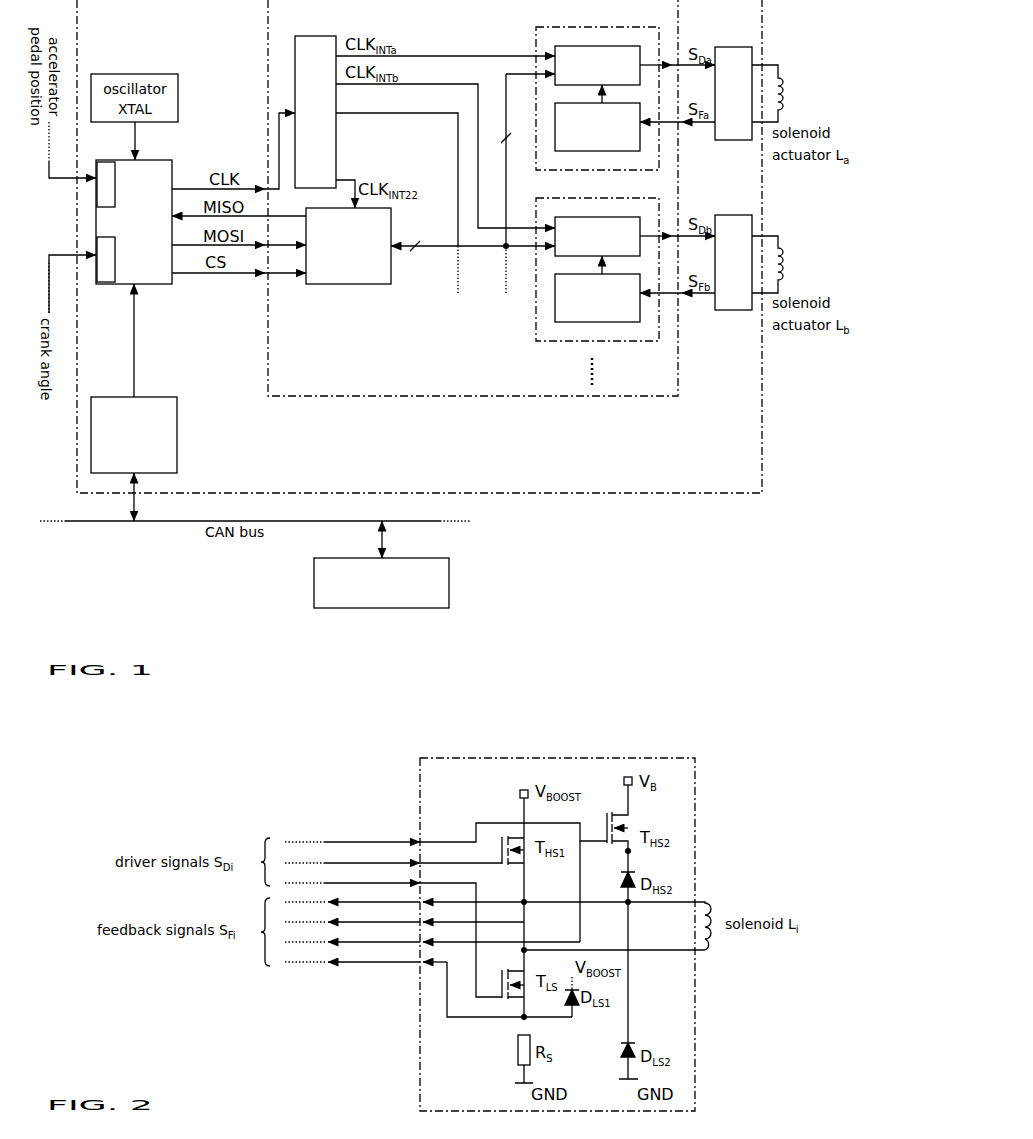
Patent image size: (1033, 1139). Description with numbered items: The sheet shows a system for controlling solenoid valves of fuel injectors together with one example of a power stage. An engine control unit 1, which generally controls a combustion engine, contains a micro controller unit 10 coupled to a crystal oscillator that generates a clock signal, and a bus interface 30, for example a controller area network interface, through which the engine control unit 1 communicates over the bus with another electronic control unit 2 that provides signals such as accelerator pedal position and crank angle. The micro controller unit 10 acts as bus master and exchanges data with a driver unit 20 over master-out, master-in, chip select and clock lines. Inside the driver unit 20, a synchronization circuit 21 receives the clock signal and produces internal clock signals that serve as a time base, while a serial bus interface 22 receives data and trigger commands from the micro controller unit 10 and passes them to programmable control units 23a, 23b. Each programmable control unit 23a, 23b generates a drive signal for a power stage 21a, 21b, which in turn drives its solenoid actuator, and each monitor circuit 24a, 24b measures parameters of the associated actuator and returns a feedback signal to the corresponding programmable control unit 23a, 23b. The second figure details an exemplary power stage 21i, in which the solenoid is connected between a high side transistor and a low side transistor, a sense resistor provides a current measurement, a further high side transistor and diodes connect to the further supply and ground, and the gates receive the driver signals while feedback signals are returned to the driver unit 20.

In FIG. 1, the engine control unit 1 is at (420, 256).
In FIG. 1, the electronic control unit 2 is at (381, 583).
In FIG. 1, the micro controller unit 10 is at (134, 222).
In FIG. 1, the driver unit 20 is at (473, 209).
In FIG. 1, the synchronization circuit 21 is at (315, 112).
In FIG. 1, the power stage 21a is at (722, 70).
In FIG. 1, the power stage 21b is at (722, 241).
In FIG. 2, the power stage 21i is at (557, 925).
In FIG. 1, the serial bus interface 22 is at (348, 246).
In FIG. 1, the programmable control unit 23a is at (597, 65).
In FIG. 1, the programmable control unit 23b is at (597, 236).
In FIG. 1, the monitor circuit 24a is at (597, 127).
In FIG. 1, the monitor circuit 24b is at (597, 298).
In FIG. 1, the bus interface 30 is at (134, 435).